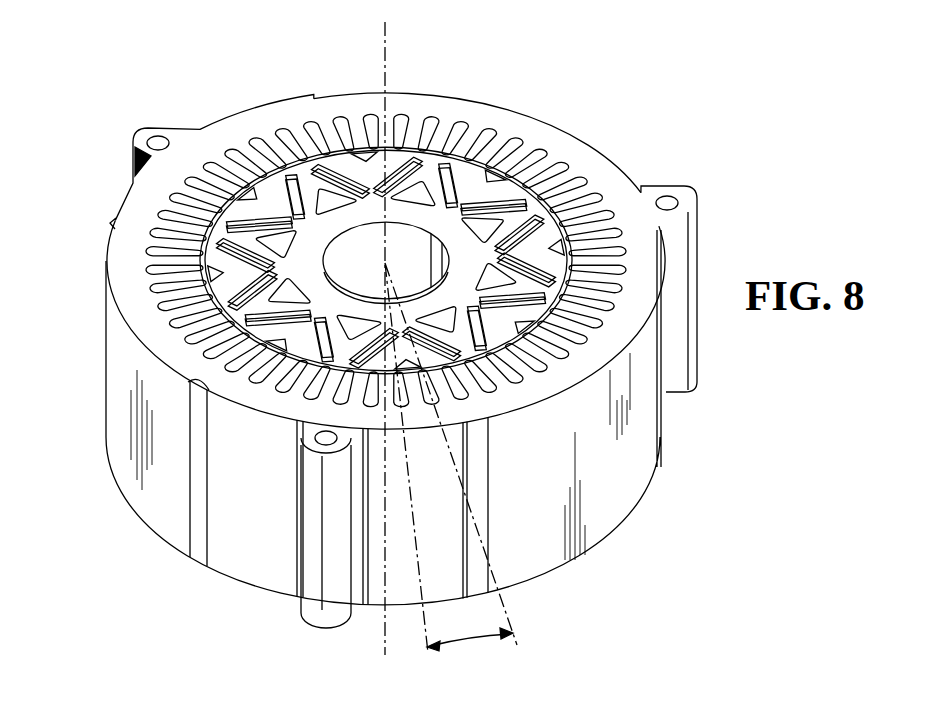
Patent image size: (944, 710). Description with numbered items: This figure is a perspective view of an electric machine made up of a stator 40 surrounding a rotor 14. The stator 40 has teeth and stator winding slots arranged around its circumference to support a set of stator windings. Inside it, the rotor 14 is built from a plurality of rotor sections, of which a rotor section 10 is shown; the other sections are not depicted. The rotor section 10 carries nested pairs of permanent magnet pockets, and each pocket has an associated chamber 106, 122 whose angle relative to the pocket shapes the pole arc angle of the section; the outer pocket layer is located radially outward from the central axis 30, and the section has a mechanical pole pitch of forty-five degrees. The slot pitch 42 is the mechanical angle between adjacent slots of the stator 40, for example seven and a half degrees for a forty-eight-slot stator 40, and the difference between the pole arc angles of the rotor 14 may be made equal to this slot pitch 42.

The axis 30 is at (383, 60).
The rotor section 10 is at (420, 147).
The chamber 106 is at (467, 150).
The chamber 122 is at (489, 160).
The rotor 14 is at (522, 218).
The stator 40 is at (135, 224).
The slot pitch 42 is at (472, 644).